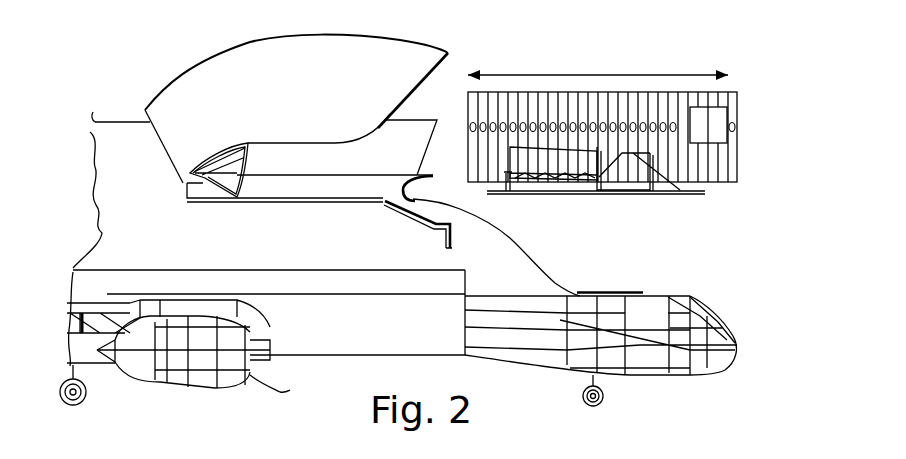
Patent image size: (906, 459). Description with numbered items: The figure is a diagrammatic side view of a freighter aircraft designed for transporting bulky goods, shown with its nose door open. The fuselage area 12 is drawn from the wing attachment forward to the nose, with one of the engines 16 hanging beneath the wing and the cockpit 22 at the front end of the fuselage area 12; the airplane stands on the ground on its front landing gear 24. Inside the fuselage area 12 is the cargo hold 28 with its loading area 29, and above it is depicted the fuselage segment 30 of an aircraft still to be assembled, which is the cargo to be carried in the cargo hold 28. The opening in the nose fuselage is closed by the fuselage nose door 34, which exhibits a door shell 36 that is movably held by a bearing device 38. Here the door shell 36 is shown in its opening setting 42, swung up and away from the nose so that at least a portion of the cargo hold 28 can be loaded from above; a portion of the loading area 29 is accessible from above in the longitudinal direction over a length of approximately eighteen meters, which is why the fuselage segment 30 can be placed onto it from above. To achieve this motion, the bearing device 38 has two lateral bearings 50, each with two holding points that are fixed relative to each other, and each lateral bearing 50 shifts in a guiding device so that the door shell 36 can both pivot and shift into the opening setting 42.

The fuselage area 12 is at (123, 122).
The engines 16 is at (262, 382).
The cockpit 22 is at (702, 312).
The front landing gear 24 is at (603, 398).
The cargo hold 28 is at (544, 238).
The loading area 29 is at (605, 293).
The fuselage segment 30 is at (730, 98).
The fuselage nose door 34 is at (164, 193).
The door shell 36 is at (205, 88).
The bearing device 38 is at (200, 209).
The opening setting 42 is at (430, 55).
The lateral bearings 50 is at (360, 169).